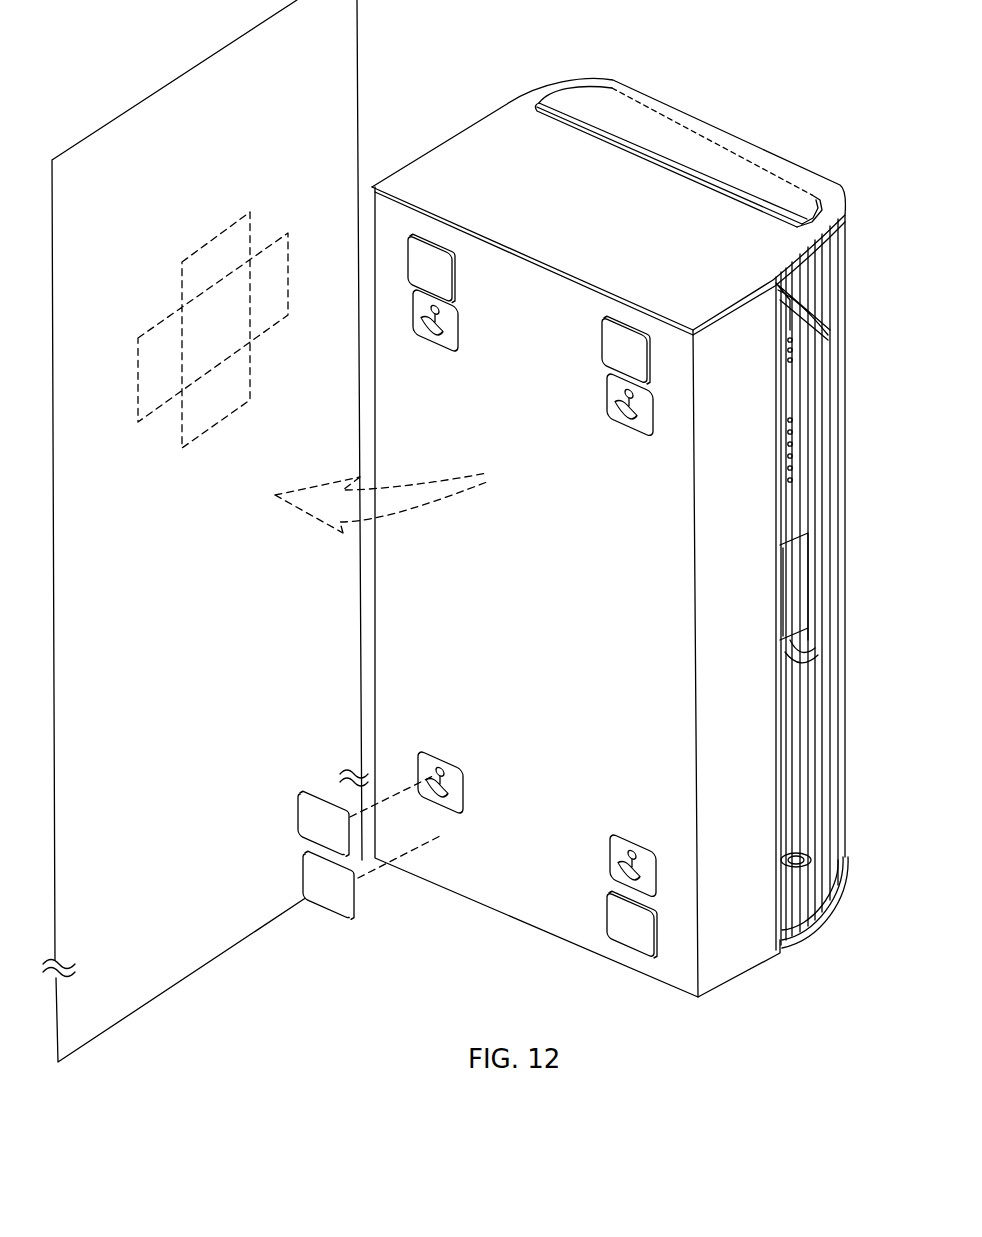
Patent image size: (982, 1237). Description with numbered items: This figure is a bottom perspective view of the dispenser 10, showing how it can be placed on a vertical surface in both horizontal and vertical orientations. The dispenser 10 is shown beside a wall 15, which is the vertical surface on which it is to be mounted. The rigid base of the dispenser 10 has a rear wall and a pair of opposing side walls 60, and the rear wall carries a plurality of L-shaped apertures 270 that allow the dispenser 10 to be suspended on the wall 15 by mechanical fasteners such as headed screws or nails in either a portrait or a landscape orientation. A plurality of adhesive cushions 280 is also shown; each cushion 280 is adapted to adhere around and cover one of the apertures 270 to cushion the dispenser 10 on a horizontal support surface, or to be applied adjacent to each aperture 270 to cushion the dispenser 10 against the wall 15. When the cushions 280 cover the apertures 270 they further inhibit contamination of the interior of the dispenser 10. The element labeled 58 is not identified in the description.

The dispenser 10 is at (610, 505).
The wall 15 is at (143, 744).
The housing 58 is at (613, 545).
The side wall 60 is at (632, 225).
The L-shaped aperture 270 is at (453, 333).
The adhesive cushion 280 is at (455, 270).